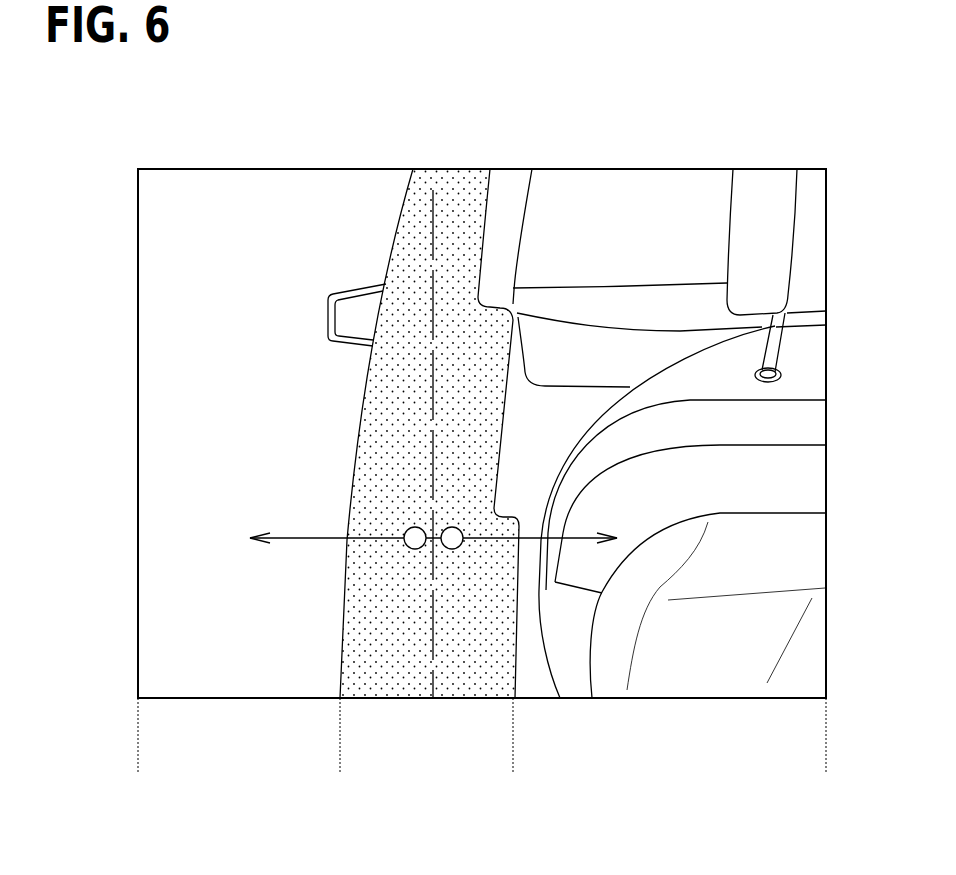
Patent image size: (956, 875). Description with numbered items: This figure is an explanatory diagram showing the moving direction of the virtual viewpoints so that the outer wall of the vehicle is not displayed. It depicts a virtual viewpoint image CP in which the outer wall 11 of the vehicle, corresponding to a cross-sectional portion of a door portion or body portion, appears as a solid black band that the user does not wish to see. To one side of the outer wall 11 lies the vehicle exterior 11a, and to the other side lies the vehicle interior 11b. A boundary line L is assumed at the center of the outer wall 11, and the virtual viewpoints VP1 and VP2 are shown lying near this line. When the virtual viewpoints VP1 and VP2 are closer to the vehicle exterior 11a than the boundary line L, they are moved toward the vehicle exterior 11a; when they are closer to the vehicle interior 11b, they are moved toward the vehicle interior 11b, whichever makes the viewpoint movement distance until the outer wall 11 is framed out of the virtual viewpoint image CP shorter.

The virtual viewpoint image CP is at (197, 169).
The outer wall 11 is at (513, 768).
The vehicle exterior 11a is at (340, 768).
The vehicle interior 11b is at (826, 768).
The boundary line L is at (433, 470).
The virtual viewpoint VP1 is at (407, 547).
The virtual viewpoint VP2 is at (448, 550).